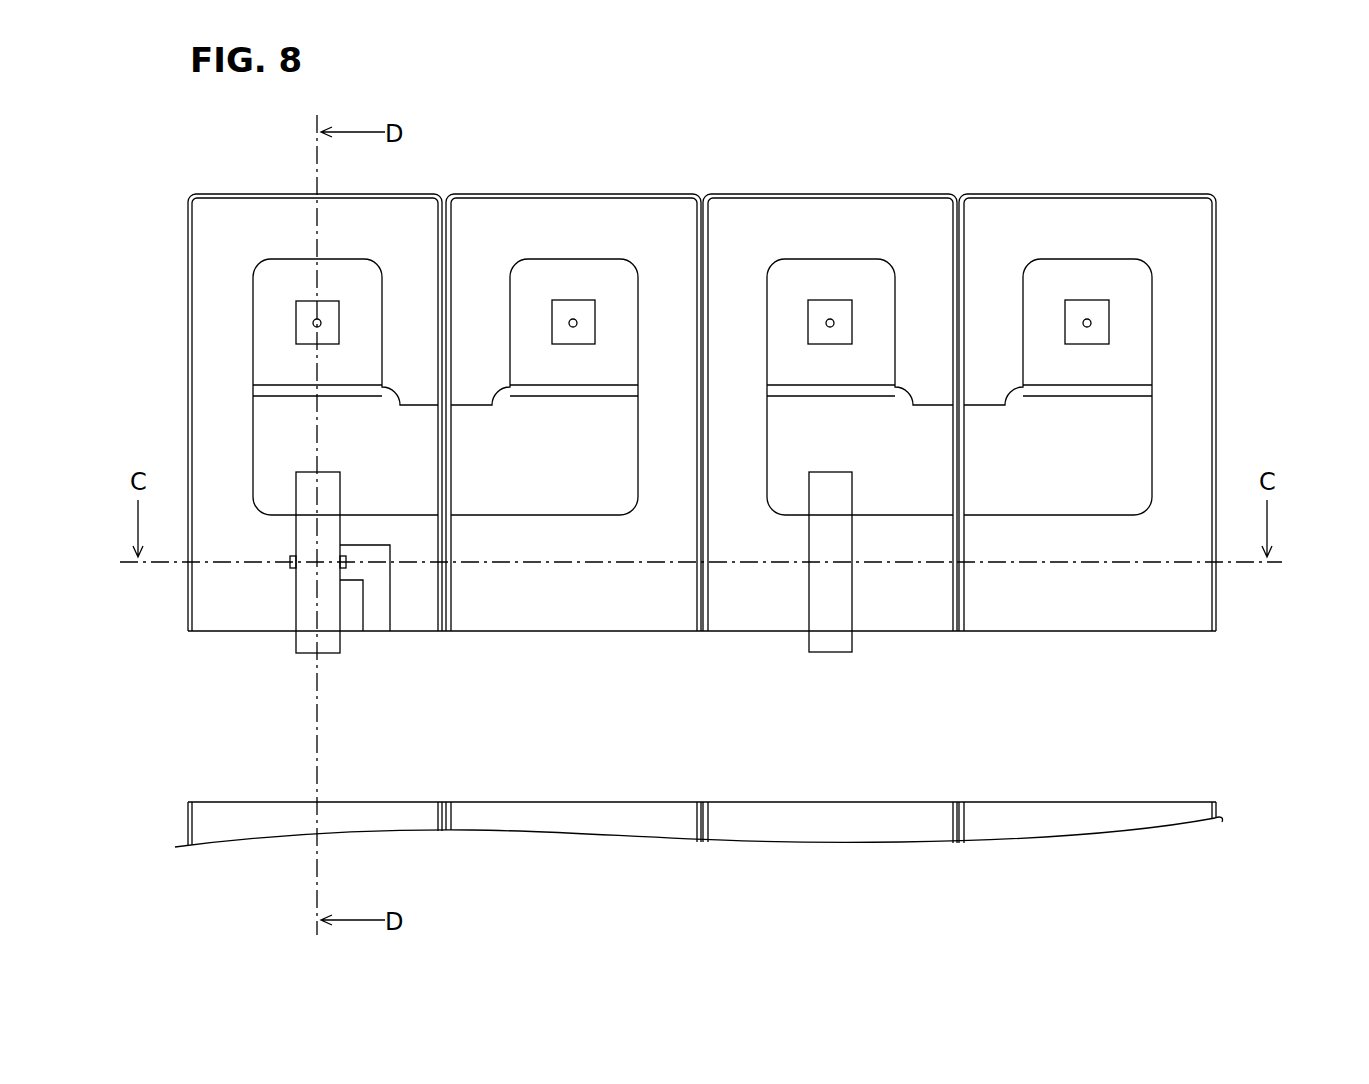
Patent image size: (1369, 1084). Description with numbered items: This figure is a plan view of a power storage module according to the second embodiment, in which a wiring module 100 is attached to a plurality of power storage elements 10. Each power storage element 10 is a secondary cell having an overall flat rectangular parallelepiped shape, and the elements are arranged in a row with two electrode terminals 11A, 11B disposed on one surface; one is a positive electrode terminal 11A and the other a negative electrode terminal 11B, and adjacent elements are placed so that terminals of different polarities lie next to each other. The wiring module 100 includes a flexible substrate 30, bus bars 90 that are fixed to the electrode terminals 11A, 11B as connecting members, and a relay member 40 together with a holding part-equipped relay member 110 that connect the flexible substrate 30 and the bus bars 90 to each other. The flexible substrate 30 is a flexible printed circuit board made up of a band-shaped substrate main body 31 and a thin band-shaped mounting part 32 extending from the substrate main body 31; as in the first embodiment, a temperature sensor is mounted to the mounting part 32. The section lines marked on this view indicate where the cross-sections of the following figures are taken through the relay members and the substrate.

The power storage element 10 is at (1072, 220).
The positive electrode terminal 11A is at (306, 312).
The negative electrode terminal 11B is at (565, 312).
The bus bar 90 is at (586, 275).
The wiring module 100 is at (1190, 605).
The holding part-equipped relay member 110 is at (305, 600).
The flexible substrate 30 is at (648, 923).
The substrate main body 31 is at (536, 780).
The mounting part 32 is at (375, 578).
The relay member 40 is at (843, 597).